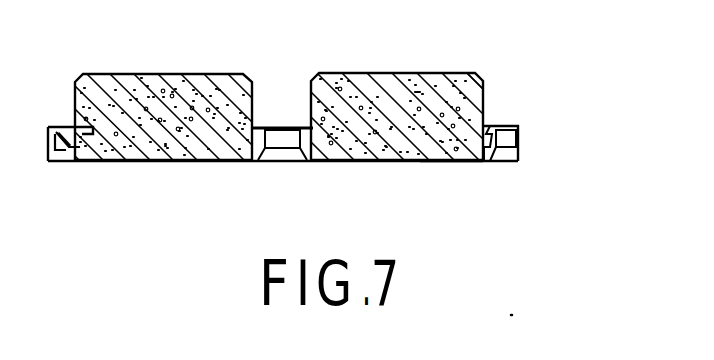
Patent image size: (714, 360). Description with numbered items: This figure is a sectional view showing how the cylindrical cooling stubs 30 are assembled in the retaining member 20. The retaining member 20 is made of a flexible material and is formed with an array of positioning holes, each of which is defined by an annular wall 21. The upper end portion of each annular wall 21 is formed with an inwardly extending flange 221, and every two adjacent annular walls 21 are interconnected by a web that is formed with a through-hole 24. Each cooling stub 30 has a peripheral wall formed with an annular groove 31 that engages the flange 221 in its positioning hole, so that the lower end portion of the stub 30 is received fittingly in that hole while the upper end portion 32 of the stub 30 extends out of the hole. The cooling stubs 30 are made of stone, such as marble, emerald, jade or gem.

The retaining member 20 is at (498, 161).
The annular wall 21 is at (327, 163).
The inwardly extending flange 221 is at (463, 160).
The through-hole 24 is at (511, 125).
The cylindrical cooling stub 30 is at (382, 161).
The annular groove 31 is at (474, 118).
The upper end portion 32 is at (476, 72).